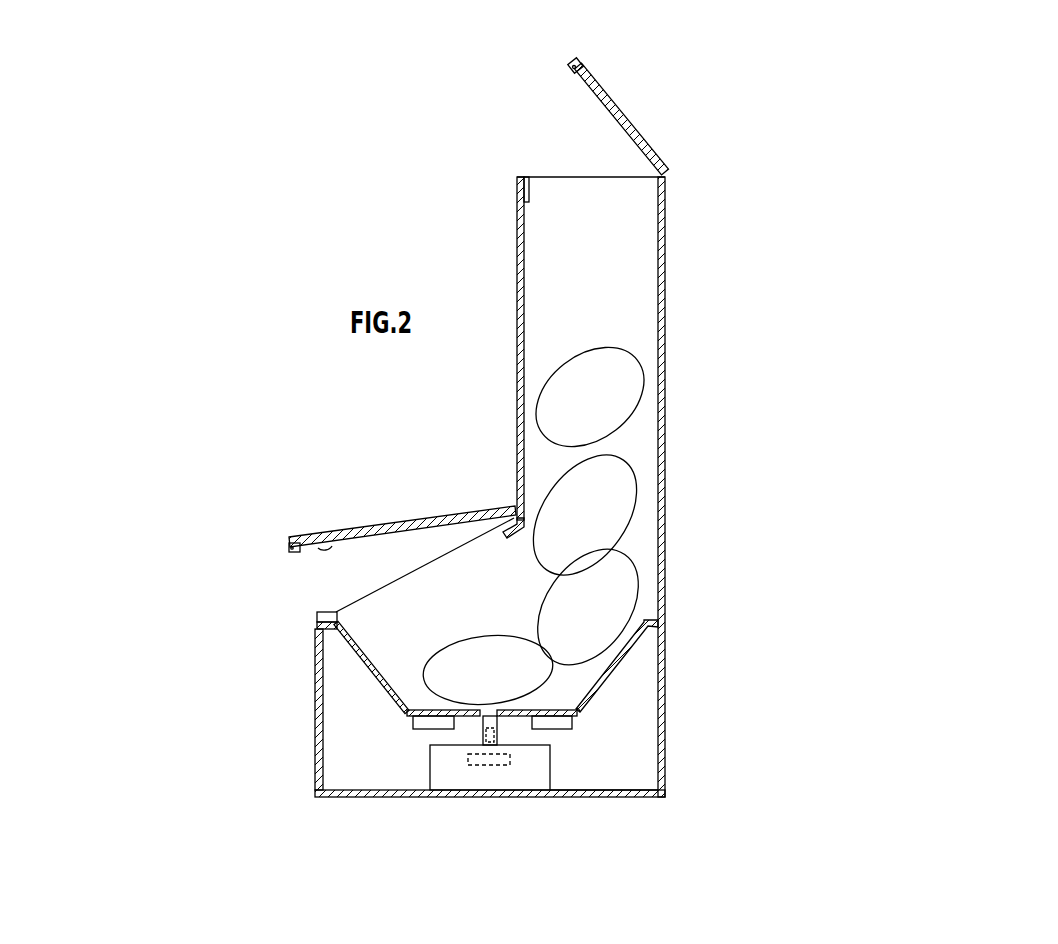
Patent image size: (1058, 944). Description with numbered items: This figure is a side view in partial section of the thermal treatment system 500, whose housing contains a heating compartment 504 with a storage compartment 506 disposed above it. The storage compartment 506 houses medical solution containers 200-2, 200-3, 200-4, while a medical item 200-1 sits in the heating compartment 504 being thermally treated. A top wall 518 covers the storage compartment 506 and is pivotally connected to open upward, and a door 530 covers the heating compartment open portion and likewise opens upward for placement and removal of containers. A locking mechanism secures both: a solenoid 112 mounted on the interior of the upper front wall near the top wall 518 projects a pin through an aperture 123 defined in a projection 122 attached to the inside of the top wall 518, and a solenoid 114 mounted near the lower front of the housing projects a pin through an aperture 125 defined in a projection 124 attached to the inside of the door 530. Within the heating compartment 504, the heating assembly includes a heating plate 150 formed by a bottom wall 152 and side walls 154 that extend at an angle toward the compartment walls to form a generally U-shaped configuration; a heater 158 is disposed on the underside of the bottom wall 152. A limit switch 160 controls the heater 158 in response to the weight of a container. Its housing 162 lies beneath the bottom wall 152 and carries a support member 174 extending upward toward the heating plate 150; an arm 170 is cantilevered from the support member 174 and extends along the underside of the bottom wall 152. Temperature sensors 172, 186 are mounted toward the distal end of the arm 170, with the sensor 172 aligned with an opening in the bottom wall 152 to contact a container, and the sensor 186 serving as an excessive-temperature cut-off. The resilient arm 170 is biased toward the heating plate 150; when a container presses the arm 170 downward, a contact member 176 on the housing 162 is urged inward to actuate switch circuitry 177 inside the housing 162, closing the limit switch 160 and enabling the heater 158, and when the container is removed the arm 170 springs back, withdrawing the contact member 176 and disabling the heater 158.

The thermal treatment system 500 is at (810, 148).
The storage compartment 506 is at (621, 283).
The heating compartment 504 is at (472, 569).
The top wall 518 is at (612, 106).
The projection 122 is at (571, 67).
The aperture 123 is at (584, 70).
The solenoid 112 is at (529, 195).
The medical item 200-1 is at (533, 661).
The medical solution container 200-2 is at (627, 591).
The medical solution container 200-3 is at (620, 518).
The medical solution container 200-4 is at (623, 398).
The door 530 is at (387, 526).
The projection 124 is at (312, 547).
The aperture 125 is at (290, 548).
The solenoid 114 is at (317, 616).
The limit switch 160 is at (406, 790).
The arm 170 is at (605, 790).
The side walls 154 is at (390, 698).
The heating plate 150 is at (606, 688).
The bottom wall 152 is at (578, 704).
The temperature sensor 172 is at (276, 714).
The temperature sensor 186 is at (477, 708).
The heater 158 is at (414, 728).
The support member 174 is at (503, 723).
The contact member 176 is at (480, 733).
The housing 162 is at (447, 778).
The switch circuitry 177 is at (491, 766).